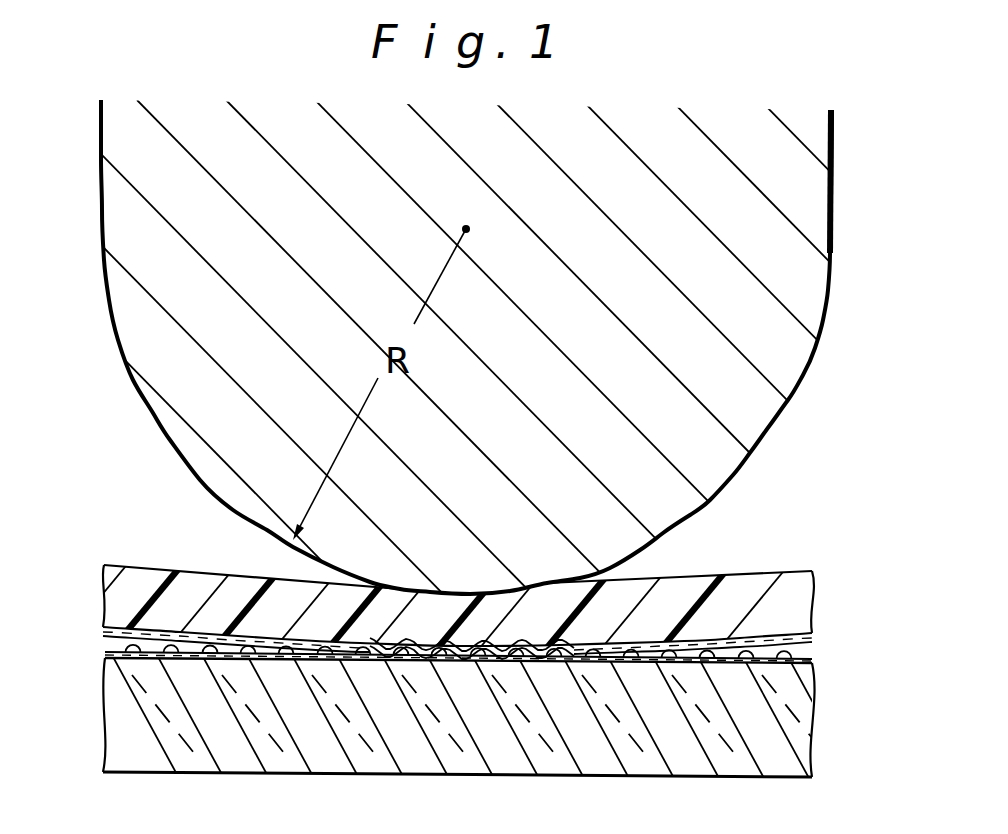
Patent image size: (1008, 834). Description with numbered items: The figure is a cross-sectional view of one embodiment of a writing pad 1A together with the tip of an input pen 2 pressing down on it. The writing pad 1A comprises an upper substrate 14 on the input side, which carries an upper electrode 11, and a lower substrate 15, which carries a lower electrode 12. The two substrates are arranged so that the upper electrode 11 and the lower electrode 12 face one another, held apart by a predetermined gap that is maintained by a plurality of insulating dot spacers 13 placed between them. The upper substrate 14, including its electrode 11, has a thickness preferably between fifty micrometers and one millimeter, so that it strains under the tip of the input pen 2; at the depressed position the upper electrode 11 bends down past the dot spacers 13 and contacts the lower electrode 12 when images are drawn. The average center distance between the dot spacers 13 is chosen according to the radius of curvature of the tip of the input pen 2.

The input pen 2 is at (702, 353).
The upper substrate 14 is at (793, 592).
The upper electrode 11 is at (812, 638).
The insulating dot spacer 13 is at (792, 647).
The lower electrode 12 is at (815, 660).
The lower substrate 15 is at (773, 750).
The writing pad 1A is at (460, 658).